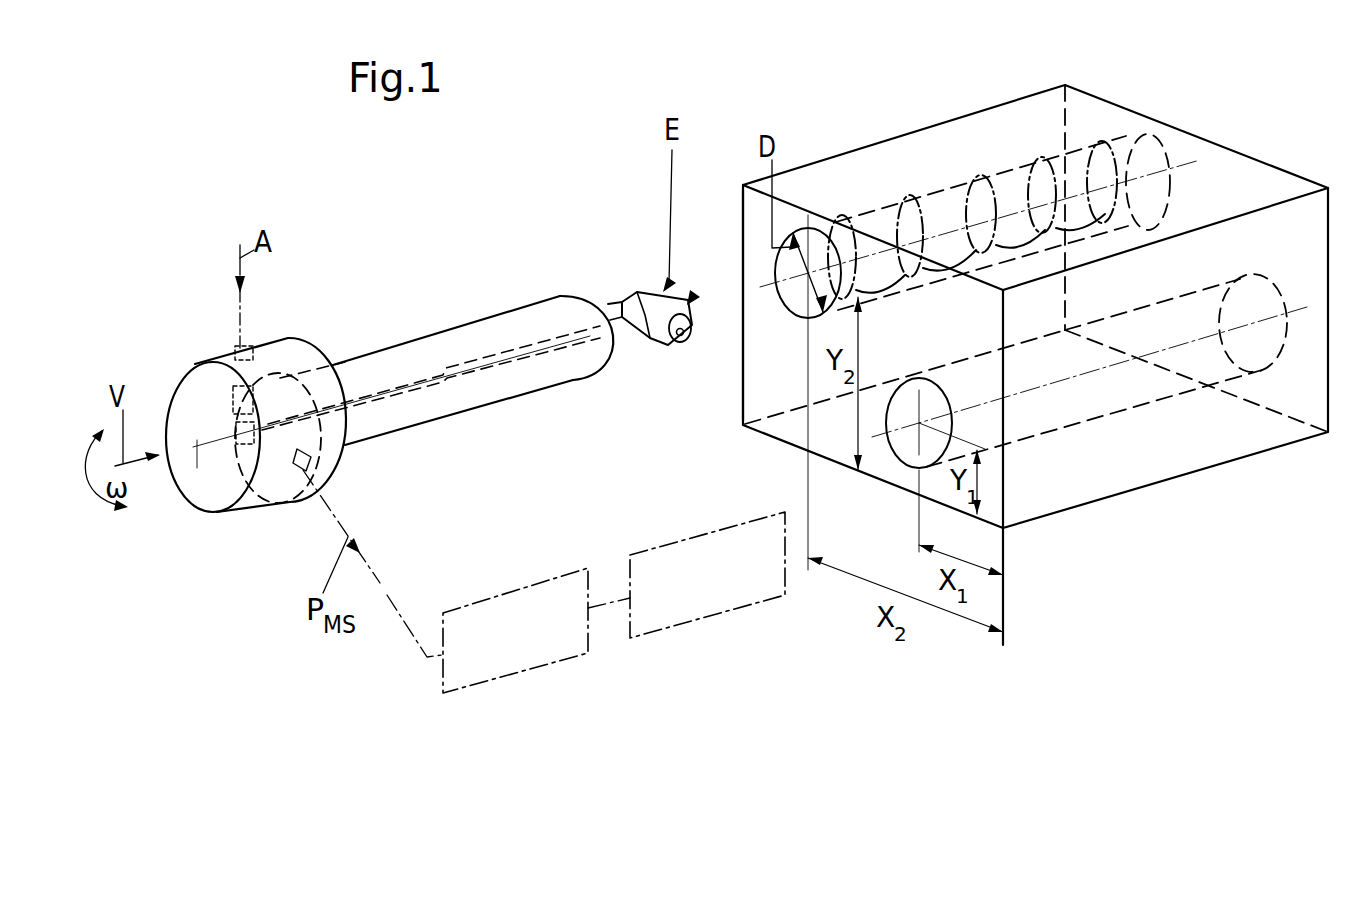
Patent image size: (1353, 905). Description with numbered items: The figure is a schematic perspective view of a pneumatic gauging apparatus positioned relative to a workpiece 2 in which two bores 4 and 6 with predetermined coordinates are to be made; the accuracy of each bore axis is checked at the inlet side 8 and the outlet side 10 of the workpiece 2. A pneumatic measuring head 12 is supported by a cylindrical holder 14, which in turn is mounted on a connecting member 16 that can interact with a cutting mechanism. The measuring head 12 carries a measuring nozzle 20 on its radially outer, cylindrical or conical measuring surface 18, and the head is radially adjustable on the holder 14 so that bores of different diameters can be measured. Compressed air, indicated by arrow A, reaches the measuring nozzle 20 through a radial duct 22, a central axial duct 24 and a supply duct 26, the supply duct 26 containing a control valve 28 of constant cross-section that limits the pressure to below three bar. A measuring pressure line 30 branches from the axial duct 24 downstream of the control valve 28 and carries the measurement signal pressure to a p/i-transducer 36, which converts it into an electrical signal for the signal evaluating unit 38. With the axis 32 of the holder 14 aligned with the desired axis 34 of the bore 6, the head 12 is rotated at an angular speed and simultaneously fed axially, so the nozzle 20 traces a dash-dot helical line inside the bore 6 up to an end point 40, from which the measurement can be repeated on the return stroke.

The workpiece 2 is at (1123, 473).
The bore 4 is at (1168, 385).
The bore 6 is at (943, 193).
The inlet side 8 is at (718, 409).
The outlet side 10 is at (1305, 160).
The pneumatic measuring head 12 is at (640, 298).
The cylindrical holder 14 is at (495, 333).
The connecting member 16 is at (205, 393).
The measuring surface 18 is at (593, 293).
The measuring nozzle 20 is at (692, 243).
The radial duct 22 is at (660, 315).
The central axial duct 24 is at (447, 370).
The supply duct 26 is at (247, 348).
The control valve 28 is at (235, 411).
The measuring pressure line 30 is at (283, 498).
The axis of the holder 32 is at (194, 487).
The desired axis of the workpiece surface 34 is at (1172, 167).
The p/i-transducer 36 is at (537, 667).
The signal evaluating unit 38 is at (683, 620).
The end point of the helical line 40 is at (1080, 170).